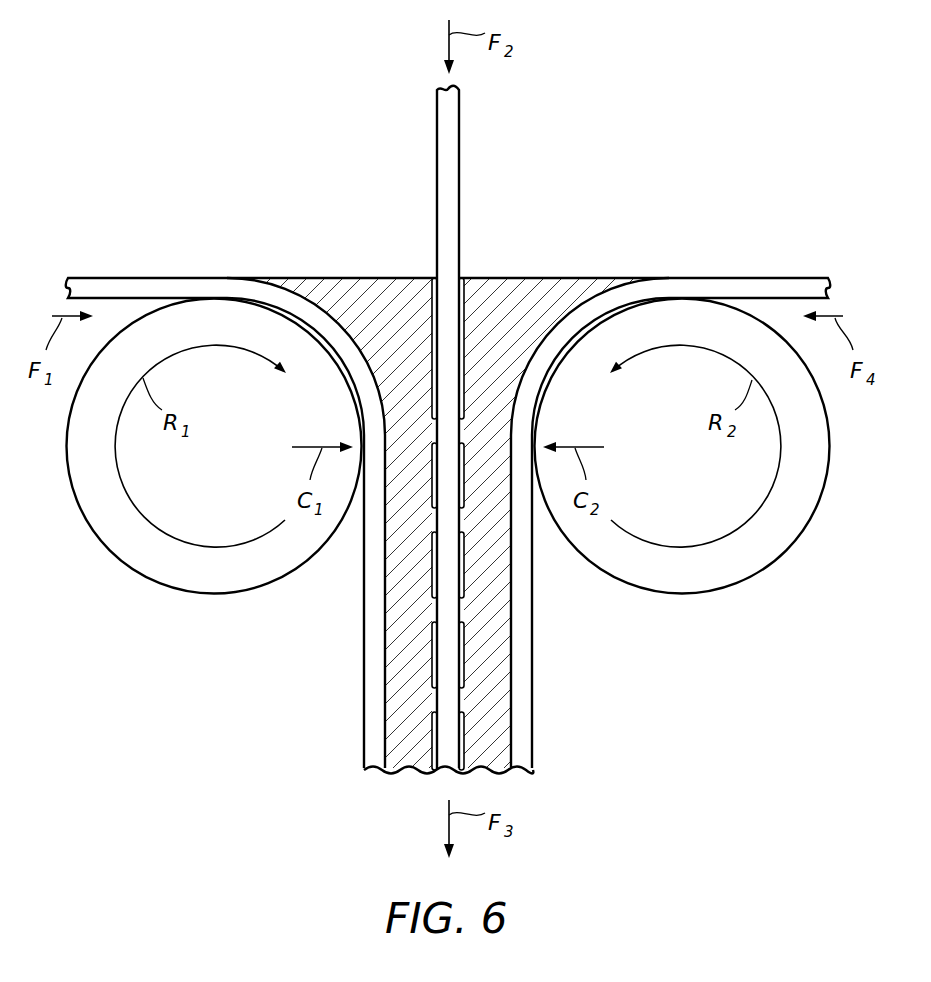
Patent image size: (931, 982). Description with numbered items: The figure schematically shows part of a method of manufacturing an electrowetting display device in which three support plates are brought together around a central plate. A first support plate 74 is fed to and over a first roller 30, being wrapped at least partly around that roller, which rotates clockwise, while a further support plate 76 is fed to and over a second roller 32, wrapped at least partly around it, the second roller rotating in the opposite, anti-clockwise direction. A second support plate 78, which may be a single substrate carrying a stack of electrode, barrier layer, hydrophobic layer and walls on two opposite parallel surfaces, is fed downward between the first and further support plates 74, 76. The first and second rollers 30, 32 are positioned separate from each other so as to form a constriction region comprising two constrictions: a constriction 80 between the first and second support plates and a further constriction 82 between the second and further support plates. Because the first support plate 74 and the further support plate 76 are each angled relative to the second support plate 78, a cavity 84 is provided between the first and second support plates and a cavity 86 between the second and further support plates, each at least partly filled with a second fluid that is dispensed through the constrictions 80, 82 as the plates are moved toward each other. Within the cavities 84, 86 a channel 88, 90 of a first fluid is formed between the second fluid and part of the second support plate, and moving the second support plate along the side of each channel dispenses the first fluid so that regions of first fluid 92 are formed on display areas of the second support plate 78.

The first roller 30 is at (214, 597).
The second roller 32 is at (678, 597).
The first support plate 74 is at (102, 290).
The further support plate 76 is at (795, 288).
The second support plate 78 is at (459, 140).
The constriction 80 is at (403, 452).
The further constriction 82 is at (493, 452).
The cavity 84 is at (326, 294).
The cavity 86 is at (575, 294).
The channel 88 is at (411, 280).
The channel 90 is at (488, 280).
The regions of first fluid 92 is at (436, 721).